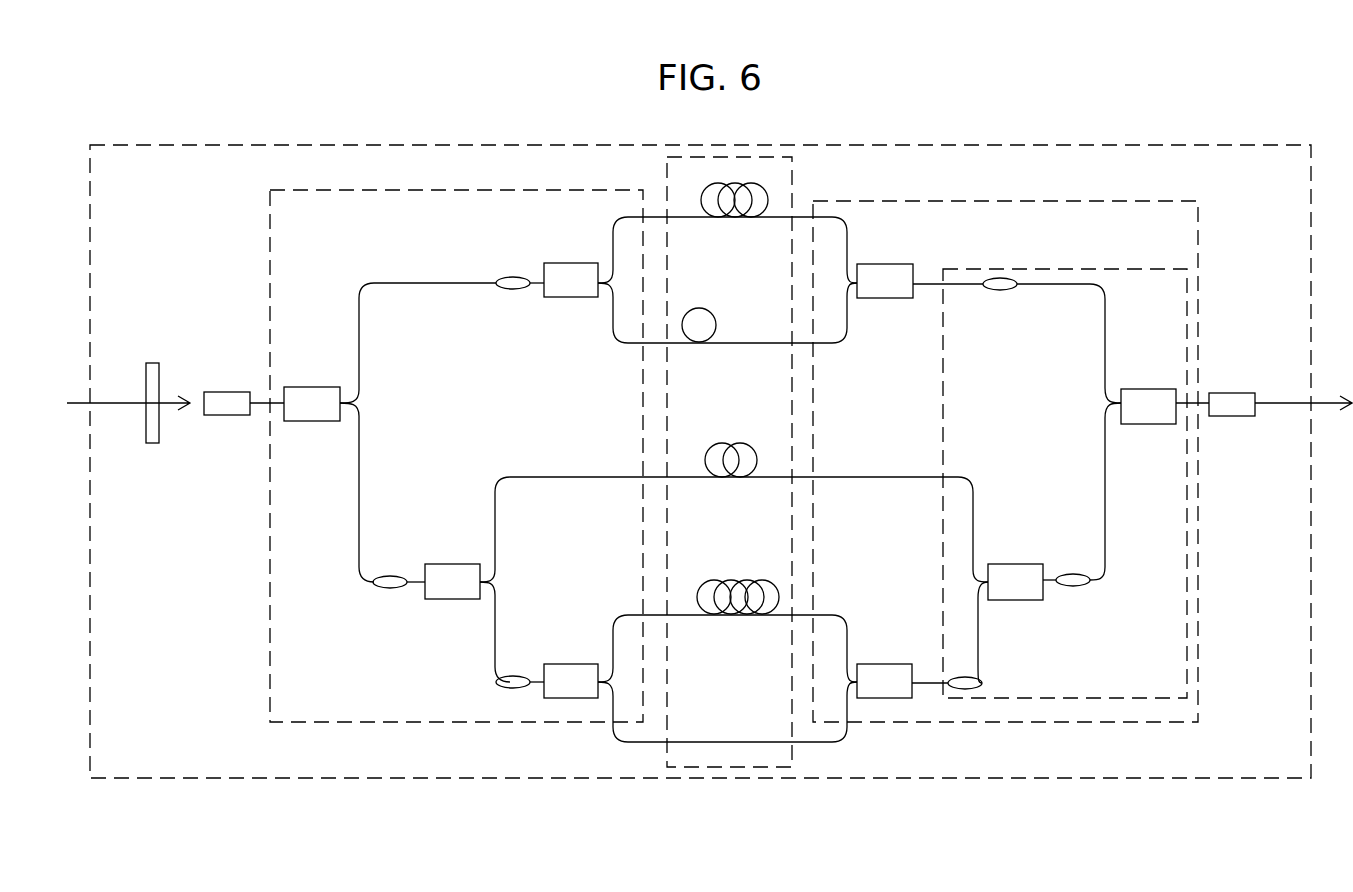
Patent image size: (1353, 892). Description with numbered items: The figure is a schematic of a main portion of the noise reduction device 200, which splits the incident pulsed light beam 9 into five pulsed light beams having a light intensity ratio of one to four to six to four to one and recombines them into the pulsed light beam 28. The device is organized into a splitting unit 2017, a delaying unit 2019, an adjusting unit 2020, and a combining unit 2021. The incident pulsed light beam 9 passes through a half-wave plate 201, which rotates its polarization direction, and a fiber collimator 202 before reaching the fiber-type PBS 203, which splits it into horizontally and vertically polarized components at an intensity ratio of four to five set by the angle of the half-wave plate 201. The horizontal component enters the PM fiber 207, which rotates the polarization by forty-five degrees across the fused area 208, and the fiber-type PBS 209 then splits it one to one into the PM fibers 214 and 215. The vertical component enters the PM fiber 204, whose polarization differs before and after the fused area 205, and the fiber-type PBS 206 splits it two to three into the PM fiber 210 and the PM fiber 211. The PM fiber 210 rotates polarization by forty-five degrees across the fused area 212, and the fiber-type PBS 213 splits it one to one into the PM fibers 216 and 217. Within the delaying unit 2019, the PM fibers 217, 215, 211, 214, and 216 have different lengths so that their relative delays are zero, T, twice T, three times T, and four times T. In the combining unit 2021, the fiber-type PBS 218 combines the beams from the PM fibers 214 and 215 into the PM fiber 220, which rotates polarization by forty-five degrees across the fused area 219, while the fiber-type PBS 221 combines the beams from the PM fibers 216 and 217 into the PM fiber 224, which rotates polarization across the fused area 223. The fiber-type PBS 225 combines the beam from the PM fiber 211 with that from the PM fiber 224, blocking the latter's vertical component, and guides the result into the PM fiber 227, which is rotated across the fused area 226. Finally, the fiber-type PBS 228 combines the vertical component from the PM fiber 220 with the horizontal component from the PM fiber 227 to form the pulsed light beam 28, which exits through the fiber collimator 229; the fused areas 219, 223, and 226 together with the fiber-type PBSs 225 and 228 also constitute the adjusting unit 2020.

The pulsed light beam 9 is at (113, 400).
The pulsed light beam 28 is at (1281, 405).
The noise reduction device 200 is at (729, 779).
The half-wave plate 201 is at (153, 444).
The fiber collimator 202 is at (228, 416).
The fiber-type PBS 203 is at (313, 422).
The PM fiber 204 is at (362, 478).
The fused area 205 is at (391, 576).
The fiber-type PBS 206 is at (452, 563).
The PM fiber 207 is at (443, 282).
The fused area 208 is at (513, 277).
The fiber-type PBS 209 is at (572, 262).
The PM fiber 210 is at (493, 650).
The PM fiber 211 is at (573, 476).
The fused area 212 is at (513, 676).
The fiber-type PBS 213 is at (573, 663).
The PM fiber 214 is at (696, 218).
The PM fiber 215 is at (761, 342).
The PM fiber 216 is at (696, 616).
The PM fiber 217 is at (761, 741).
The fiber-type PBS 218 is at (885, 263).
The fused area 219 is at (1000, 291).
The PM fiber 220 is at (1058, 285).
The fiber-type PBS 221 is at (887, 663).
The fused area 223 is at (984, 678).
The PM fiber 224 is at (922, 682).
The fiber-type PBS 225 is at (1017, 563).
The fused area 226 is at (1074, 587).
The PM fiber 227 is at (1104, 478).
The fiber-type PBS 228 is at (1149, 425).
The fiber collimator 229 is at (1233, 417).
The splitting unit 2017 is at (383, 723).
The delaying unit 2019 is at (793, 173).
The adjusting unit 2020 is at (941, 398).
The combining unit 2021 is at (989, 723).